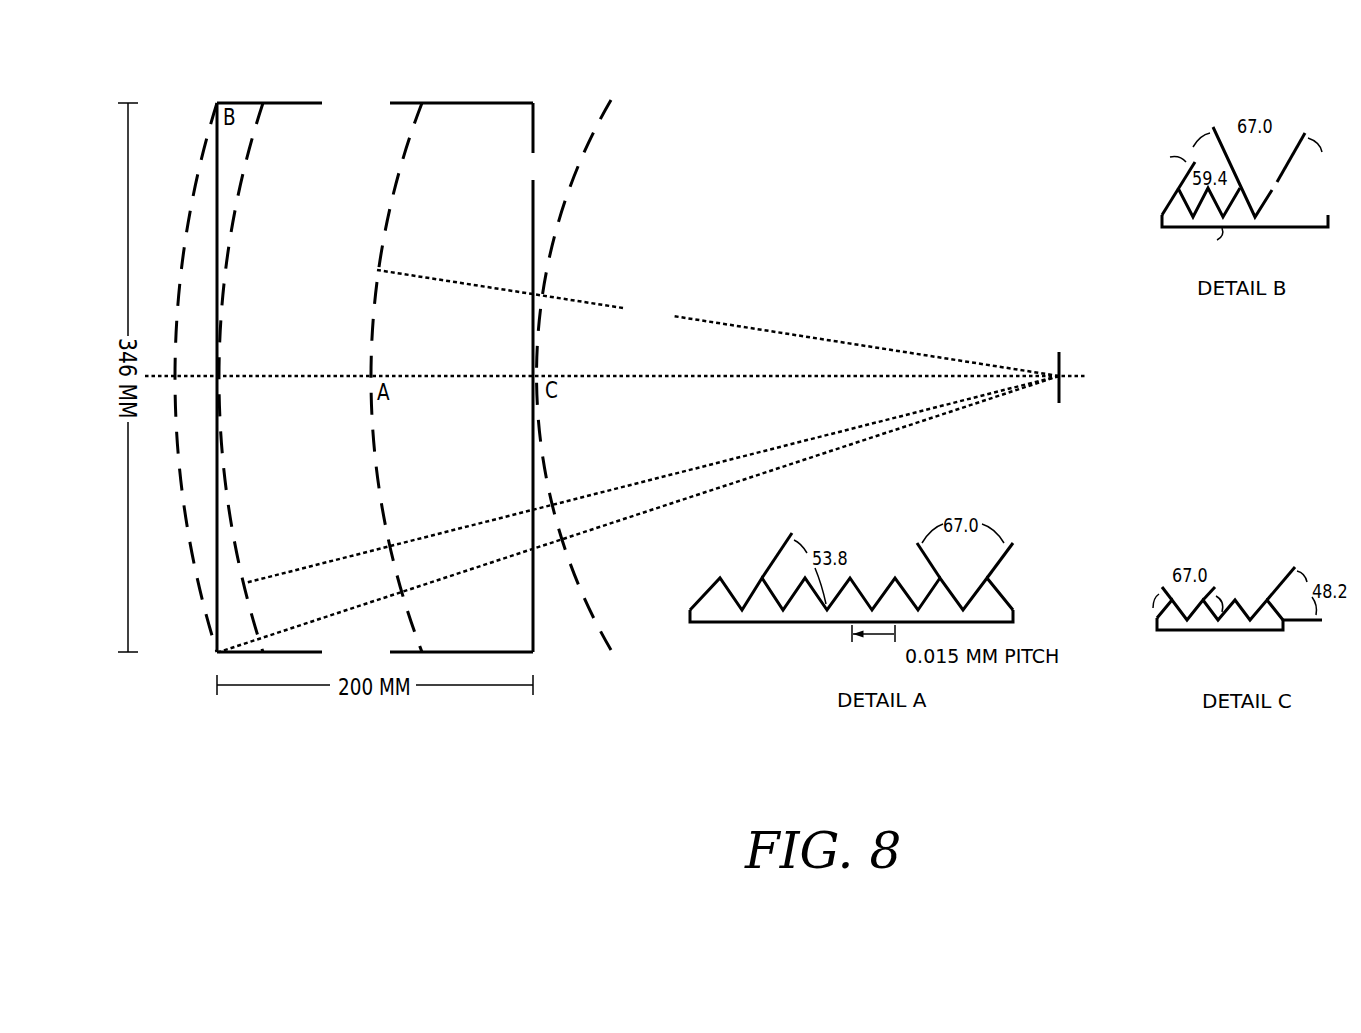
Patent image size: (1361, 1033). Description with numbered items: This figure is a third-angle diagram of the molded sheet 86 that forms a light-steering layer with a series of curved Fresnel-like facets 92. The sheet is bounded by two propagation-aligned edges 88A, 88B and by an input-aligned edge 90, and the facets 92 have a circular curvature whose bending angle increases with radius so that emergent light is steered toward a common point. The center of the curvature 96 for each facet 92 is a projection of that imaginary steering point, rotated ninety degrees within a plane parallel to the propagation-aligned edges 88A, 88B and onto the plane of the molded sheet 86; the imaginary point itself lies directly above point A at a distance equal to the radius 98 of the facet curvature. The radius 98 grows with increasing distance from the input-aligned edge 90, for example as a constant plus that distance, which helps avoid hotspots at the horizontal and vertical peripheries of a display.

The molded sheet 86 is at (298, 68).
The propagation-aligned edge 88A is at (375, 104).
The propagation-aligned edge 88B is at (375, 652).
The curved Fresnel-like facet 92 is at (396, 377).
The input-aligned edge 90 is at (564, 376).
The radius of the facet curvature 98 is at (718, 323).
The center of the curvature 96 is at (1073, 380).